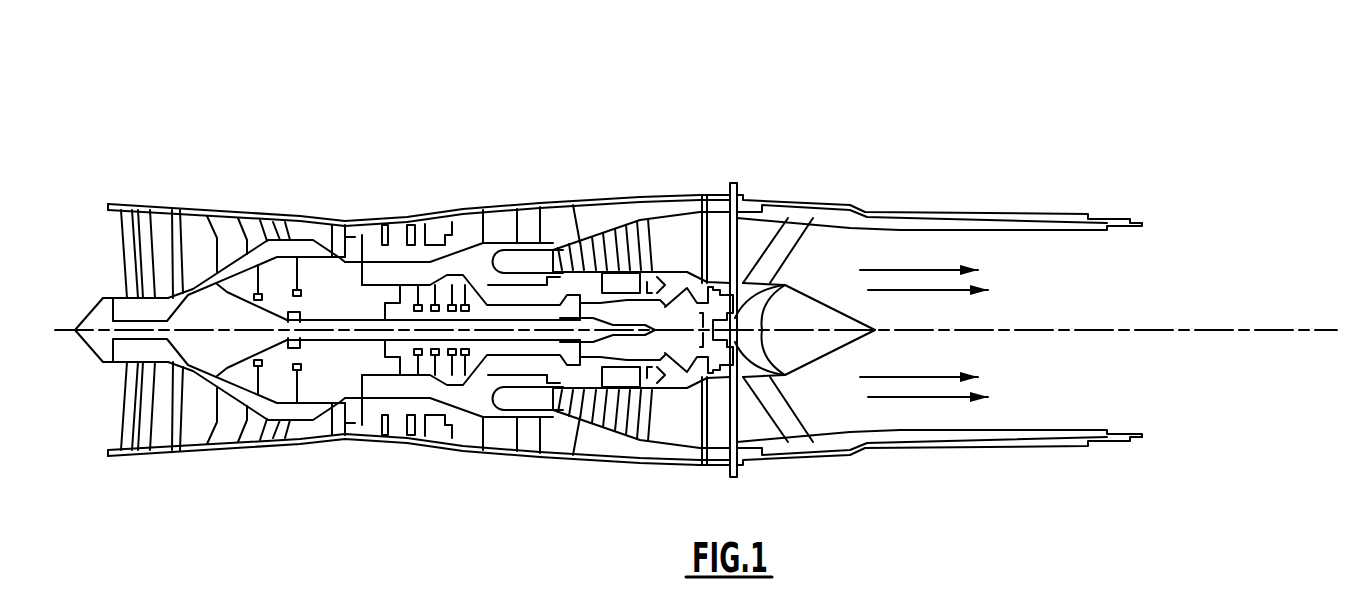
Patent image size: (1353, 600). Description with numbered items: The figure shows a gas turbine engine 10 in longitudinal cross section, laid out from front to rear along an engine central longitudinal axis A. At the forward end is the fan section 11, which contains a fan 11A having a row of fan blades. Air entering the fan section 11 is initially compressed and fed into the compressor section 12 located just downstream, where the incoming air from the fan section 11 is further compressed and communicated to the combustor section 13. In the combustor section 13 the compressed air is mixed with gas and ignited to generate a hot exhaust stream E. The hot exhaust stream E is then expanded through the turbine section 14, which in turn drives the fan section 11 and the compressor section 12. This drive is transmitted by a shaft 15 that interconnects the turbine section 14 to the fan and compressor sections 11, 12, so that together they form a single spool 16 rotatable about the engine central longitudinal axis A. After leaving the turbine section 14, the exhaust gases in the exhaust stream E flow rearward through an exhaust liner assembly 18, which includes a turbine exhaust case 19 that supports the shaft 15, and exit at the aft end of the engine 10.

The gas turbine engine 10 is at (529, 250).
The fan section 11 is at (327, 136).
The fan 11A is at (161, 361).
The compressor section 12 is at (502, 136).
The combustor section 13 is at (588, 136).
The turbine section 14 is at (757, 136).
The shaft 15 is at (433, 406).
The single spool 16 is at (291, 375).
The exhaust liner assembly 18 is at (760, 136).
The turbine exhaust case 19 is at (798, 257).
The hot exhaust stream E is at (924, 388).
The engine central longitudinal axis A is at (701, 300).